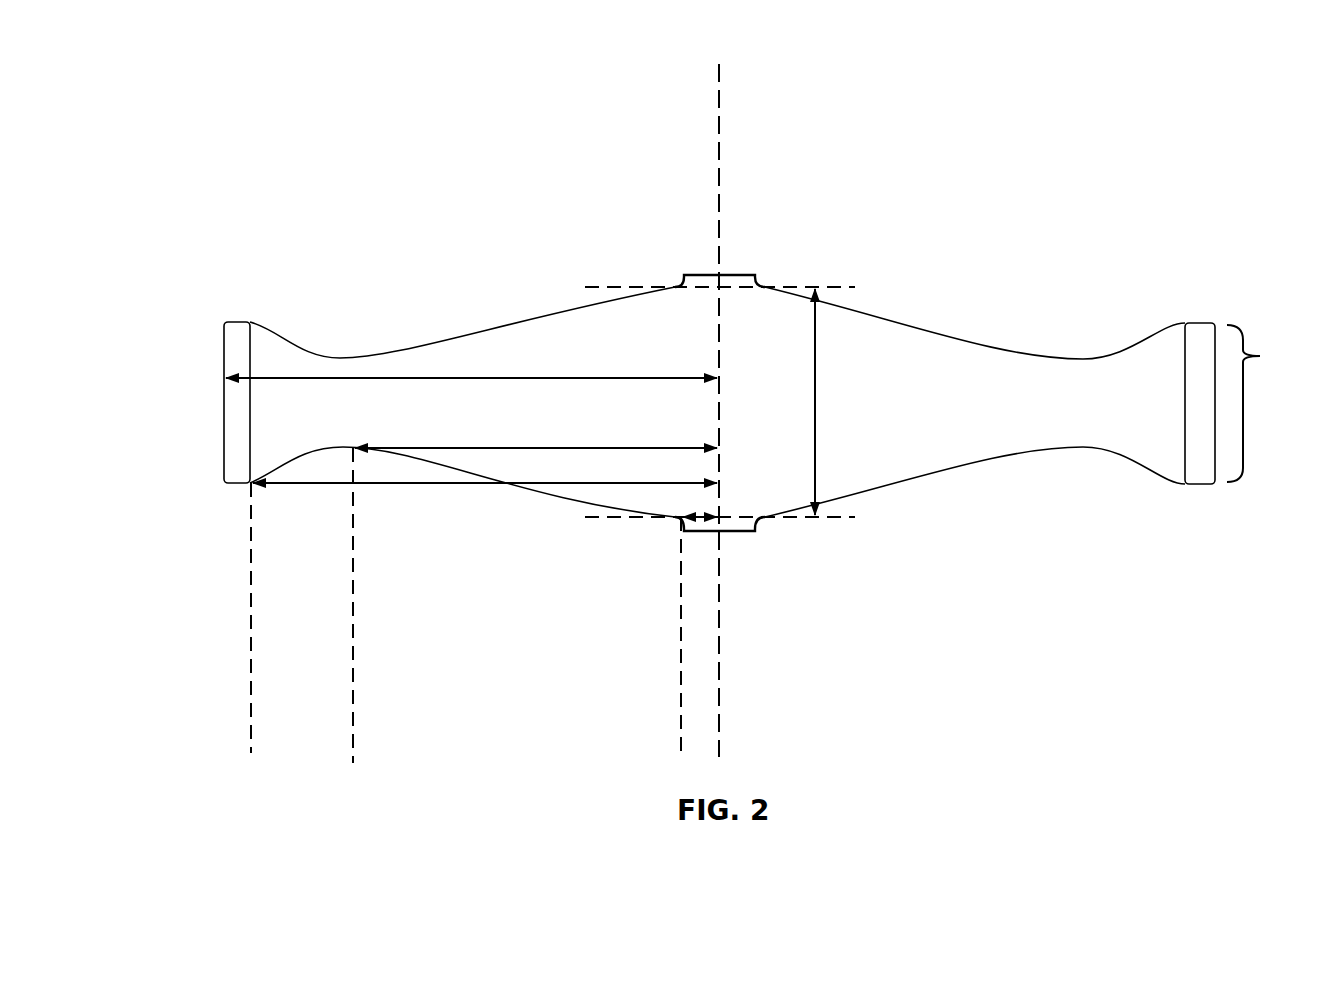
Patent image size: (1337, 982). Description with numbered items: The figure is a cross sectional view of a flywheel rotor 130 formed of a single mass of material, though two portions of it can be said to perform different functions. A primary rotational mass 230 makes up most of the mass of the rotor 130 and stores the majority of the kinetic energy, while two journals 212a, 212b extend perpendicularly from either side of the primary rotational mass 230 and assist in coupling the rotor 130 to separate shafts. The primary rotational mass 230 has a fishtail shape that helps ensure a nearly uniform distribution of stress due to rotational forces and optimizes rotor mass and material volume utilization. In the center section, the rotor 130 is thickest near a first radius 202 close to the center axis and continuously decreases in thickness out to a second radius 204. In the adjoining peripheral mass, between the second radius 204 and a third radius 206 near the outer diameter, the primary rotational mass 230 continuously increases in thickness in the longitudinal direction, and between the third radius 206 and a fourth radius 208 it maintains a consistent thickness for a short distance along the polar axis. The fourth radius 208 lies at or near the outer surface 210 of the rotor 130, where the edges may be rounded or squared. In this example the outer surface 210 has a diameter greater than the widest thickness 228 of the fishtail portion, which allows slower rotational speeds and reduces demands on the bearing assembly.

The flywheel rotor 130 is at (326, 81).
The first radius 202 is at (706, 520).
The second radius 204 is at (447, 450).
The third radius 206 is at (303, 487).
The fourth radius 208 is at (367, 378).
The outer surface 210 is at (224, 400).
The journal 212a is at (712, 284).
The journal 212b is at (738, 527).
The widest thickness 228 is at (817, 472).
The primary rotational mass 230 is at (1265, 403).